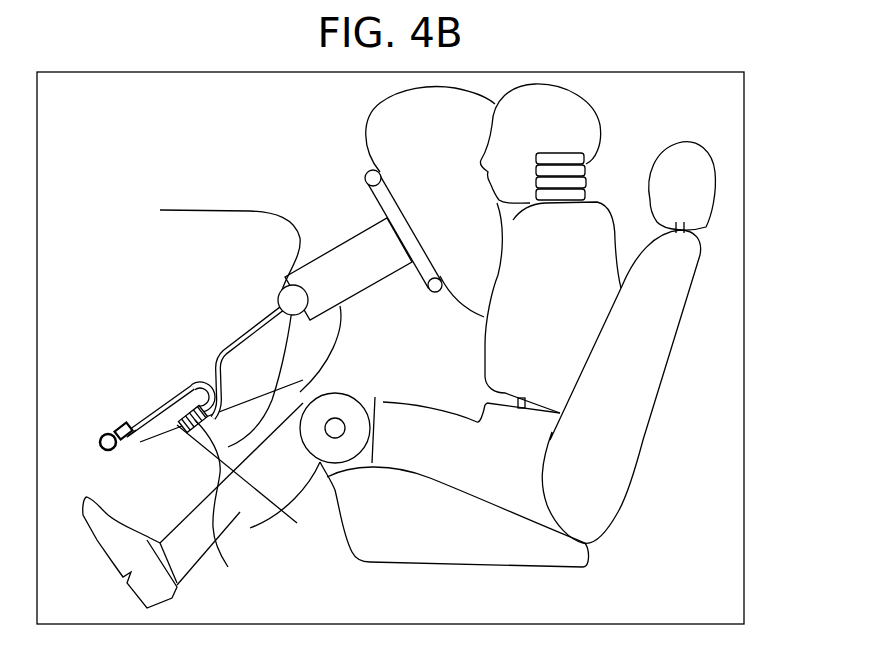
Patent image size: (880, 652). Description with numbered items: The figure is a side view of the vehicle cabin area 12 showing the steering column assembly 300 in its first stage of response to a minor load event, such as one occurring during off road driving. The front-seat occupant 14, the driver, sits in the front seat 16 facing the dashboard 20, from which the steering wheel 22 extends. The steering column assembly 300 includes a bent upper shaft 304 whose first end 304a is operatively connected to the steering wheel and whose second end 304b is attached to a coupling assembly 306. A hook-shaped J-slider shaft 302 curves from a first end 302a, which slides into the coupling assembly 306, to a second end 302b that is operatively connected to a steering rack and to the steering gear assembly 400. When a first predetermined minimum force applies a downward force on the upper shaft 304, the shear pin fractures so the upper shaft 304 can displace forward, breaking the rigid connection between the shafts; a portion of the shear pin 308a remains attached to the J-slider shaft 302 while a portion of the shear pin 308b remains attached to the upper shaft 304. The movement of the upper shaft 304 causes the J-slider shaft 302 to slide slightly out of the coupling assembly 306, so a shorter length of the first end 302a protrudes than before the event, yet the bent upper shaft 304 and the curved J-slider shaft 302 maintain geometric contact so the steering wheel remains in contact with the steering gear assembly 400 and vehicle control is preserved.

The vehicle cabin area 12 is at (679, 62).
The front-seat occupant 14 is at (583, 130).
The front seat 16 is at (603, 473).
The dashboard 20 is at (218, 210).
The steering wheel 22 is at (388, 127).
The steering column assembly 300 is at (144, 294).
The J-slider shaft 302 is at (160, 410).
The first end of the J-slider shaft 302a is at (135, 444).
The second end of the J-slider shaft 302b is at (117, 424).
The upper shaft 304 is at (260, 325).
The first end of the upper shaft 304a is at (327, 245).
The second end of the upper shaft 304b is at (180, 437).
The coupling assembly 306 is at (196, 378).
The portion of the shear pin 308a is at (251, 490).
The portion of the shear pin 308b is at (231, 505).
The steering gear assembly 400 is at (100, 445).